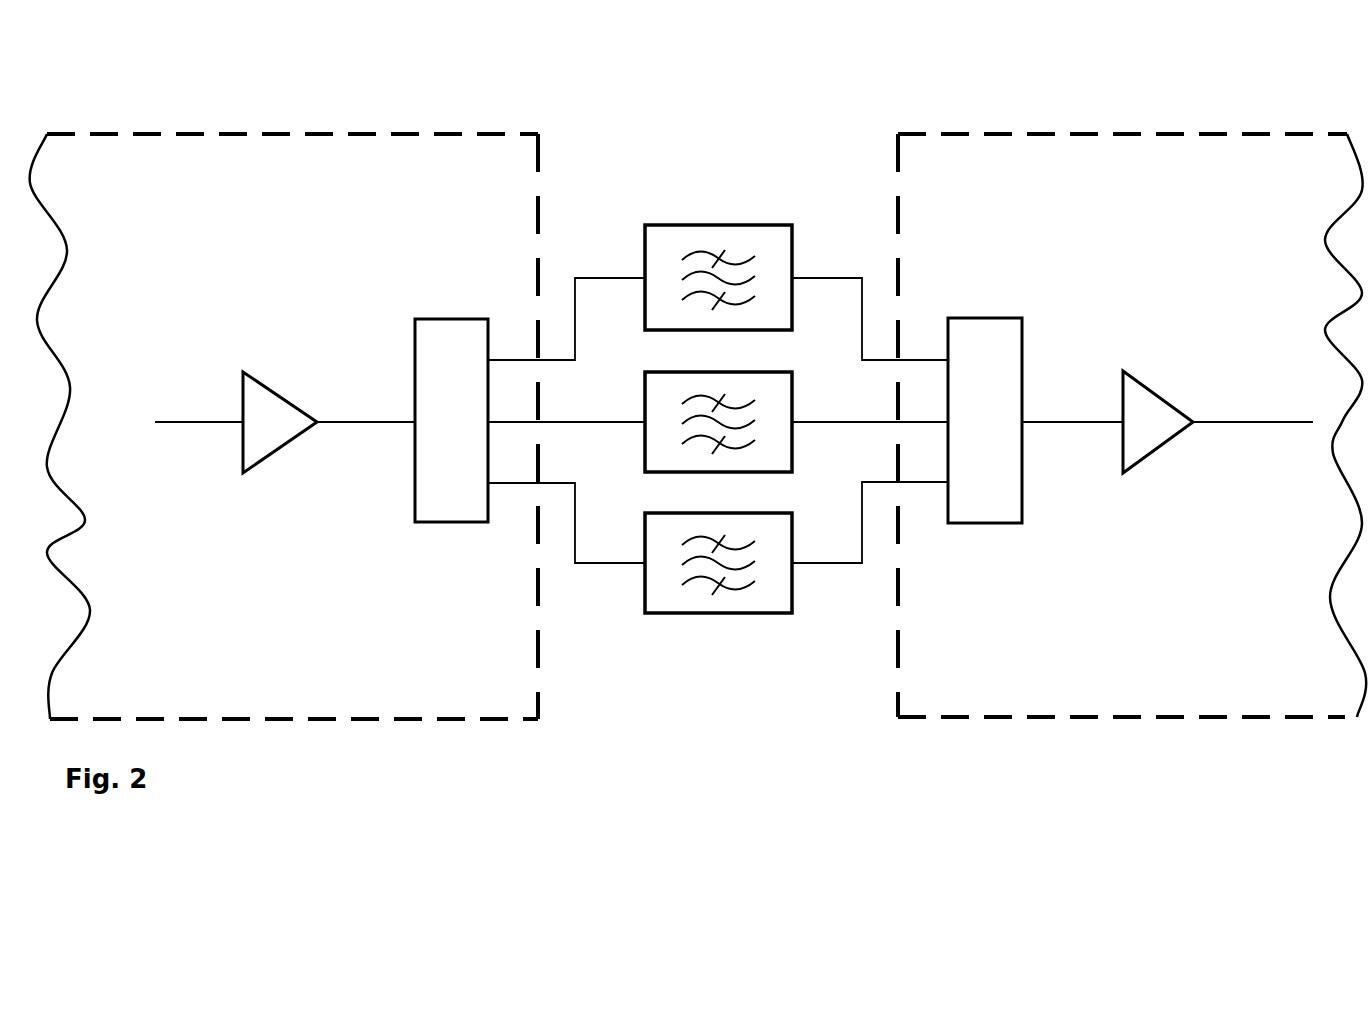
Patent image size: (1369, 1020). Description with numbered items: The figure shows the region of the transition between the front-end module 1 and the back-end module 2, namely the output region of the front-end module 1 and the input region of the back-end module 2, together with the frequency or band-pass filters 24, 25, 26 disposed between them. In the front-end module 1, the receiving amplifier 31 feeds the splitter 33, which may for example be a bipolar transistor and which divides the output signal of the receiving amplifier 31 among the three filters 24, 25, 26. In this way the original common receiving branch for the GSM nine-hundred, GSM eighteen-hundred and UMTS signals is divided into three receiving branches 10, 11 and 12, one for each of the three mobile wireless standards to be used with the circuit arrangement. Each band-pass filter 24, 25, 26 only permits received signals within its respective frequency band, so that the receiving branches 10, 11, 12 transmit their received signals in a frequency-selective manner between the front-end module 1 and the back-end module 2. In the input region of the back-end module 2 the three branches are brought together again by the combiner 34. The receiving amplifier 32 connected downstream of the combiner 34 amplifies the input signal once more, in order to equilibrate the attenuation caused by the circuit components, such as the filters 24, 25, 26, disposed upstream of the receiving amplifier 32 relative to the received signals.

The front-end module 1 is at (308, 193).
The back-end module 2 is at (1105, 193).
The receiving branch 10 is at (627, 275).
The receiving branch 11 is at (628, 418).
The receiving branch 12 is at (630, 561).
The frequency or band-pass filter 24 is at (750, 242).
The frequency or band-pass filter 25 is at (750, 392).
The frequency or band-pass filter 26 is at (750, 528).
The receiving amplifier 31 is at (280, 422).
The receiving amplifier 32 is at (1158, 422).
The splitter 33 is at (451, 420).
The combiner 34 is at (985, 420).